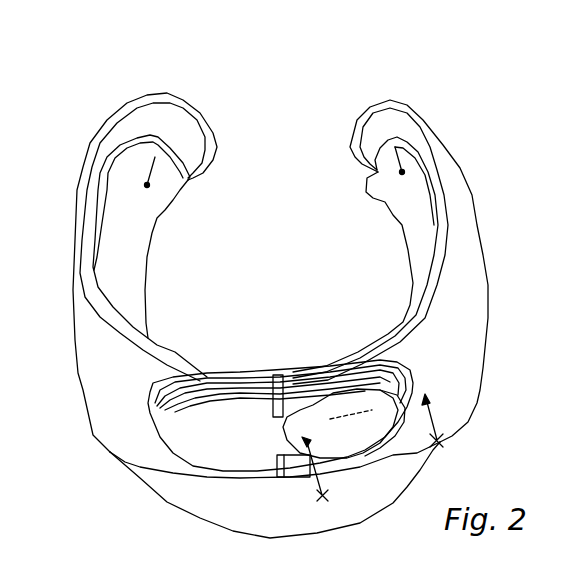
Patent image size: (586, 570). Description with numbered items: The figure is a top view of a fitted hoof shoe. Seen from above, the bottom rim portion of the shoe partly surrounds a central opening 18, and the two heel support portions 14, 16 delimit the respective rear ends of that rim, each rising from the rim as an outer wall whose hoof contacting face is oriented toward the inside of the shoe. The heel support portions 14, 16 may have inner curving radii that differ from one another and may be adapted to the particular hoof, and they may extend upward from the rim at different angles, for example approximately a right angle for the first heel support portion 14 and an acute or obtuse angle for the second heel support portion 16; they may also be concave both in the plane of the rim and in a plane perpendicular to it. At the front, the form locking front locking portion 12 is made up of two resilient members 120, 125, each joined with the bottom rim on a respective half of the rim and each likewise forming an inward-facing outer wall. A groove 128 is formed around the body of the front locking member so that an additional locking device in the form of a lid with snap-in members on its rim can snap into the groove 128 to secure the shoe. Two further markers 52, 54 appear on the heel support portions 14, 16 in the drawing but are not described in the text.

The front locking portion 12 is at (258, 455).
The heel support portion 14 is at (393, 91).
The heel support portion 16 is at (158, 76).
The central opening 18 is at (274, 206).
The left hook 52 is at (157, 157).
The right hook 54 is at (395, 147).
The resilient member 120 is at (306, 375).
The resilient member 125 is at (200, 375).
The groove 128 is at (222, 374).